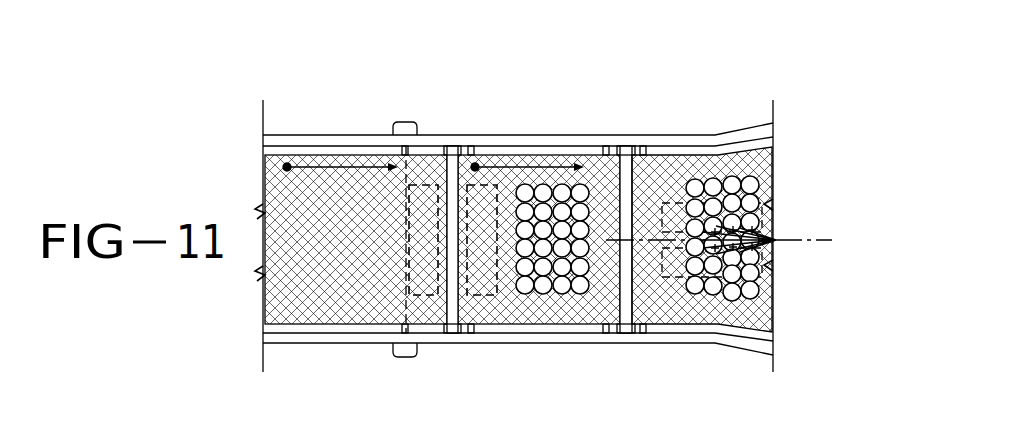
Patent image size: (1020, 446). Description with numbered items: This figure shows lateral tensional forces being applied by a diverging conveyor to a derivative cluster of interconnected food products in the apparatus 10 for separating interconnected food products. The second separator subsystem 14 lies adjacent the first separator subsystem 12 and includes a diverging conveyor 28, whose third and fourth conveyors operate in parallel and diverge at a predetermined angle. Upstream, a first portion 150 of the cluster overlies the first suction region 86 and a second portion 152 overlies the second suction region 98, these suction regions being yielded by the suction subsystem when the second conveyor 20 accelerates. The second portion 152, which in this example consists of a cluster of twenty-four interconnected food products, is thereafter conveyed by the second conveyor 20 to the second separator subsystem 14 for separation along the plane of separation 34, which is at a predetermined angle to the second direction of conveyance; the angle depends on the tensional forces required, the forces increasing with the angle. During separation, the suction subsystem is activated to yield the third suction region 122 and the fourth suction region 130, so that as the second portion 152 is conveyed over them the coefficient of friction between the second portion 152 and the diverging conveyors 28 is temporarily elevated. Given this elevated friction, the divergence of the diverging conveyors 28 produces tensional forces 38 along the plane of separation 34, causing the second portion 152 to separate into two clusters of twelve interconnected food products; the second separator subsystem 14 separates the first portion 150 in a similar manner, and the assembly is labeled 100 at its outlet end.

The ammunition / projectile assembly 10 is at (210, 104).
The first separator subsystem 12 is at (613, 394).
The second separator subsystem 14 is at (700, 257).
The second conveyor 20 is at (578, 305).
The diverging conveyor 28 is at (762, 166).
The plane of separation 34 is at (650, 244).
The tensional forces 38 is at (778, 232).
The first suction region 86 is at (426, 186).
The second suction region 98 is at (484, 186).
The assembly end 100 is at (703, 186).
The third suction region 122 is at (772, 194).
The fourth suction region 130 is at (770, 283).
The first portion 150 is at (537, 303).
The second portion 152 is at (702, 163).